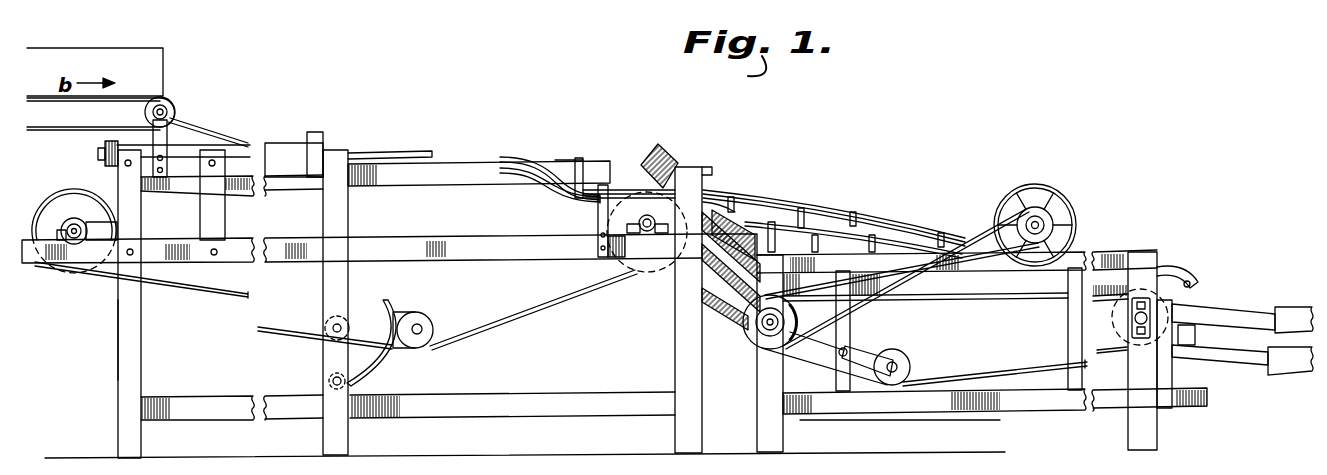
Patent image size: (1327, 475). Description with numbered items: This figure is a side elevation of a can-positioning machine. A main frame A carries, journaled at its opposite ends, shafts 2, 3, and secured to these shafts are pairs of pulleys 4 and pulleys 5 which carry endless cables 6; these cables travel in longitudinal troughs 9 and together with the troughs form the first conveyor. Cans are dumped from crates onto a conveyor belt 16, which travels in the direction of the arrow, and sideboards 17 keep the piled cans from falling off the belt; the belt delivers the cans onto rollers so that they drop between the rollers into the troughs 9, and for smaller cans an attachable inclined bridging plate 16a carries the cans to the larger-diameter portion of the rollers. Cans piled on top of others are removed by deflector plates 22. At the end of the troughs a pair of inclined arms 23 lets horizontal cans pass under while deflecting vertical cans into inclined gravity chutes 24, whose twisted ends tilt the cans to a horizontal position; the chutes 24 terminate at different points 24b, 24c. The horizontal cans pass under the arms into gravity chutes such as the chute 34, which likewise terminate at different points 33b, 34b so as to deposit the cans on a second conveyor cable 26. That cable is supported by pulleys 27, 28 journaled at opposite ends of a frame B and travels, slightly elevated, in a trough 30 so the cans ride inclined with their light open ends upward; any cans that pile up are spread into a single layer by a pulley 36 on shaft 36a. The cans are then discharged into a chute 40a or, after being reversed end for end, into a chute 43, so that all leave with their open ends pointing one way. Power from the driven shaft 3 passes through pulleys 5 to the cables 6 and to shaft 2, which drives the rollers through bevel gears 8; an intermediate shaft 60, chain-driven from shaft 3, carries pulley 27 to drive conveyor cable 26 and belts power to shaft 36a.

The sideboards 17 is at (147, 63).
The conveyor belt 16 is at (72, 106).
The bridging plate 16a is at (202, 132).
The pulleys 4 is at (58, 192).
The bevel gears 8 is at (90, 222).
The shaft 2 is at (73, 238).
The main frame A is at (123, 345).
The deflector plates 22 is at (402, 153).
The troughs 9 is at (448, 172).
The inclined arms 23 is at (553, 160).
The inclined gravity chutes 24 is at (573, 170).
The gravity chute 34 is at (672, 158).
The pulleys 5 is at (630, 273).
The shaft 3 is at (648, 232).
The endless cables 6 is at (528, 316).
The chute termination 34b is at (782, 240).
The chute termination 33b is at (827, 248).
The chute termination 24c is at (880, 242).
The chute termination 24b is at (923, 230).
The pulley 36 is at (1058, 190).
The shaft 36a is at (1043, 222).
The pulley 28 is at (1168, 310).
The chute 40a is at (1243, 320).
The chute 43 is at (1243, 370).
The conveyor cable 26 is at (1023, 347).
The intermediate shaft 60 is at (790, 332).
The pulley 27 is at (750, 338).
The trough 30 is at (978, 292).
The frame B is at (1017, 400).